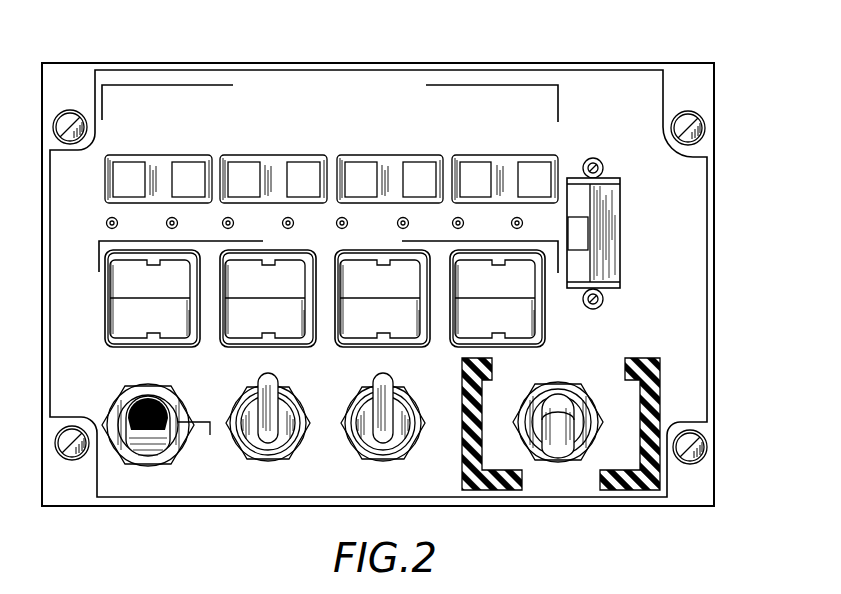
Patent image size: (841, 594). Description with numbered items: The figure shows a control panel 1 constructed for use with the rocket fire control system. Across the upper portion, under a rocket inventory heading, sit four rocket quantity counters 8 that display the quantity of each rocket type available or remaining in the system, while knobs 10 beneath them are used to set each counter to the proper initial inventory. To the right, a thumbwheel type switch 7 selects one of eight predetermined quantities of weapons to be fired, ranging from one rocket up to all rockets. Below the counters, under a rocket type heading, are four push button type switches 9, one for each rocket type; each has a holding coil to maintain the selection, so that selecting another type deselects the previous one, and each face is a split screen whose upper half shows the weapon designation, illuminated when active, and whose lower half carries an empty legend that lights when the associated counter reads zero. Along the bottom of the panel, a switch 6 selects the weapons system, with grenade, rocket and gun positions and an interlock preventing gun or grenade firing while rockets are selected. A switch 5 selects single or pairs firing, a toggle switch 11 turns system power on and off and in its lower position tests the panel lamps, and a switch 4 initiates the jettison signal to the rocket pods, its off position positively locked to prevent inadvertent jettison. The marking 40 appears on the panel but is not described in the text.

The control panel 1 is at (283, 64).
The switch 4 is at (598, 406).
The switch 5 is at (306, 405).
The switch 6 is at (122, 433).
The thumbwheel type switch 7 is at (615, 180).
The rocket quantity counters 8 is at (223, 158).
The push button type switches 9 is at (221, 347).
The knobs 10 is at (118, 225).
The toggle switch 11 is at (417, 444).
The rocket type indicator A 40 is at (152, 311).